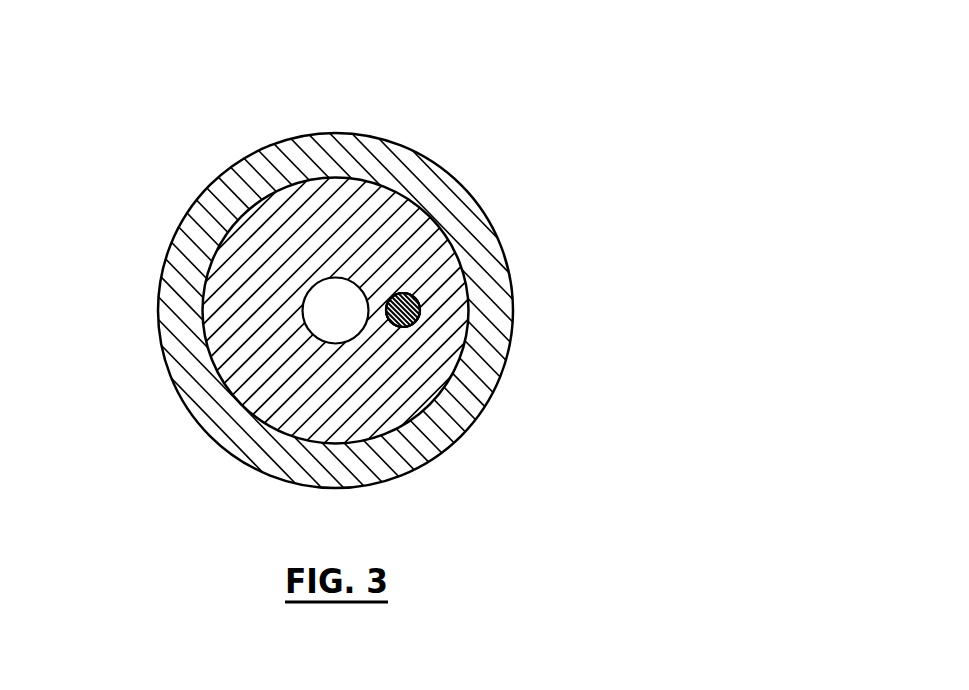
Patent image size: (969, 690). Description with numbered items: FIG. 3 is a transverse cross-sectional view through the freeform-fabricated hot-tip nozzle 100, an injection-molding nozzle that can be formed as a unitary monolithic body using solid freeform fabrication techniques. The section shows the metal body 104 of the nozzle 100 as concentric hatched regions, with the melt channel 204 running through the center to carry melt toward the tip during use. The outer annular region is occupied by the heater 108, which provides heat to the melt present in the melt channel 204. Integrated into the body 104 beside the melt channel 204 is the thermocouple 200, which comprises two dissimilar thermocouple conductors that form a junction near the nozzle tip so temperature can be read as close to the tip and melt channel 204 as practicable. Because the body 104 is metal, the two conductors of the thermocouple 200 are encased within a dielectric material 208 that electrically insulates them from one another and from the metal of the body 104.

The hot-tip nozzle 100 is at (438, 245).
The heater 108 is at (213, 209).
The body 104 is at (214, 400).
The melt channel 204 is at (309, 308).
The thermocouple 200 is at (428, 286).
The dielectric material 208 is at (403, 328).